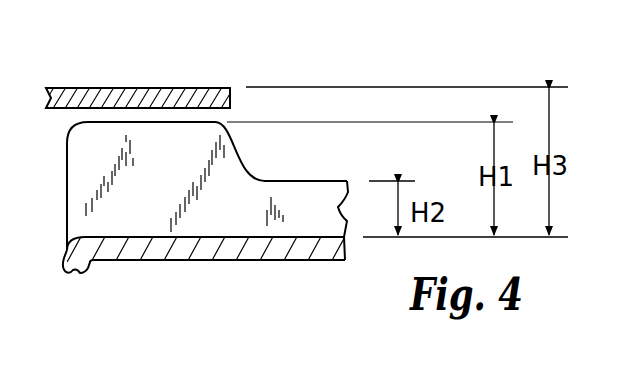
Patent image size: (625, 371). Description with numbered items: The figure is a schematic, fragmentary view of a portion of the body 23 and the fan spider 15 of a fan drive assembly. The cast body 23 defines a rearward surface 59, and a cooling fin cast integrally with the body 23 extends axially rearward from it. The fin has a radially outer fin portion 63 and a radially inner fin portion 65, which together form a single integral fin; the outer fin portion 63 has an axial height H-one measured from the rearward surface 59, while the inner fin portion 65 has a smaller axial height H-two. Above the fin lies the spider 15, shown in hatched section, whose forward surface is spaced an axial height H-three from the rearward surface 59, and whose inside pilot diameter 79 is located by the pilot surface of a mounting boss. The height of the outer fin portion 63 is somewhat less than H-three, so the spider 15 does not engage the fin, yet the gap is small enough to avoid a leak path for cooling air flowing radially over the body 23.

The spider 15 is at (80, 88).
The inside pilot diameter 79 is at (230, 91).
The radially outer fin portion 63 is at (80, 182).
The rearward surface 59 is at (113, 237).
The body 23 is at (148, 246).
The radially inner fin portion 65 is at (307, 212).